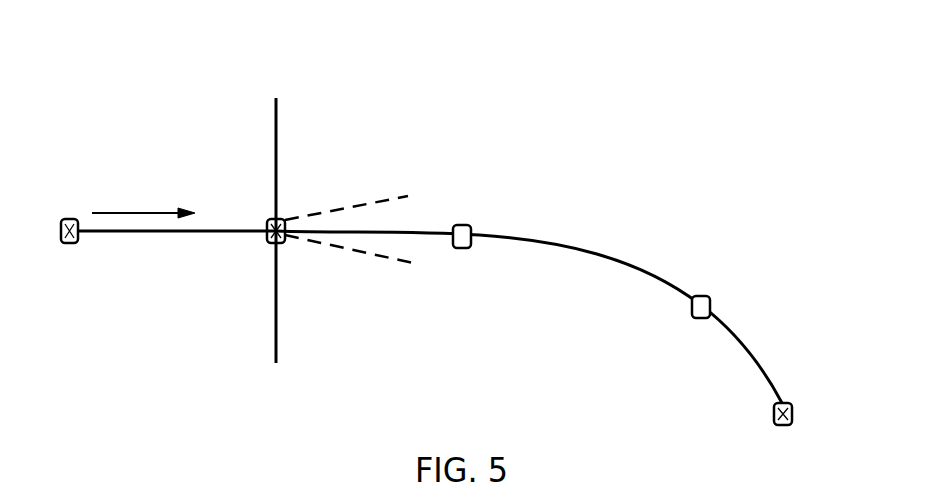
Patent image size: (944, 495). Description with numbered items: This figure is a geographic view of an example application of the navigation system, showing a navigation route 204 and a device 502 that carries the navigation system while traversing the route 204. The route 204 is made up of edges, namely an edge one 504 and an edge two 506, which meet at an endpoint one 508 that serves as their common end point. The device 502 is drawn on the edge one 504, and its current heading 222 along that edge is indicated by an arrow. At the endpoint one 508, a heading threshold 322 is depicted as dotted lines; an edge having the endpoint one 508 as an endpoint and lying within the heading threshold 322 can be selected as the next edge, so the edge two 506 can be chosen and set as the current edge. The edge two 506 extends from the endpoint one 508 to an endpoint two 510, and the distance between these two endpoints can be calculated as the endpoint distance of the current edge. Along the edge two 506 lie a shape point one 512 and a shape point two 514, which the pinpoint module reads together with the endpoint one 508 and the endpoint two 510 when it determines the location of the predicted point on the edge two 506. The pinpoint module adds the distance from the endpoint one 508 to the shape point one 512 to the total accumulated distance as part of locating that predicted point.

The route 204 is at (166, 116).
The current heading 222 is at (124, 210).
The heading threshold 322 is at (332, 245).
The device 502 is at (67, 247).
The edge one 504 is at (140, 232).
The edge two 506 is at (547, 243).
The endpoint one 508 is at (270, 222).
The endpoint two 510 is at (795, 403).
The shape point one 512 is at (465, 248).
The shape point two 514 is at (692, 317).